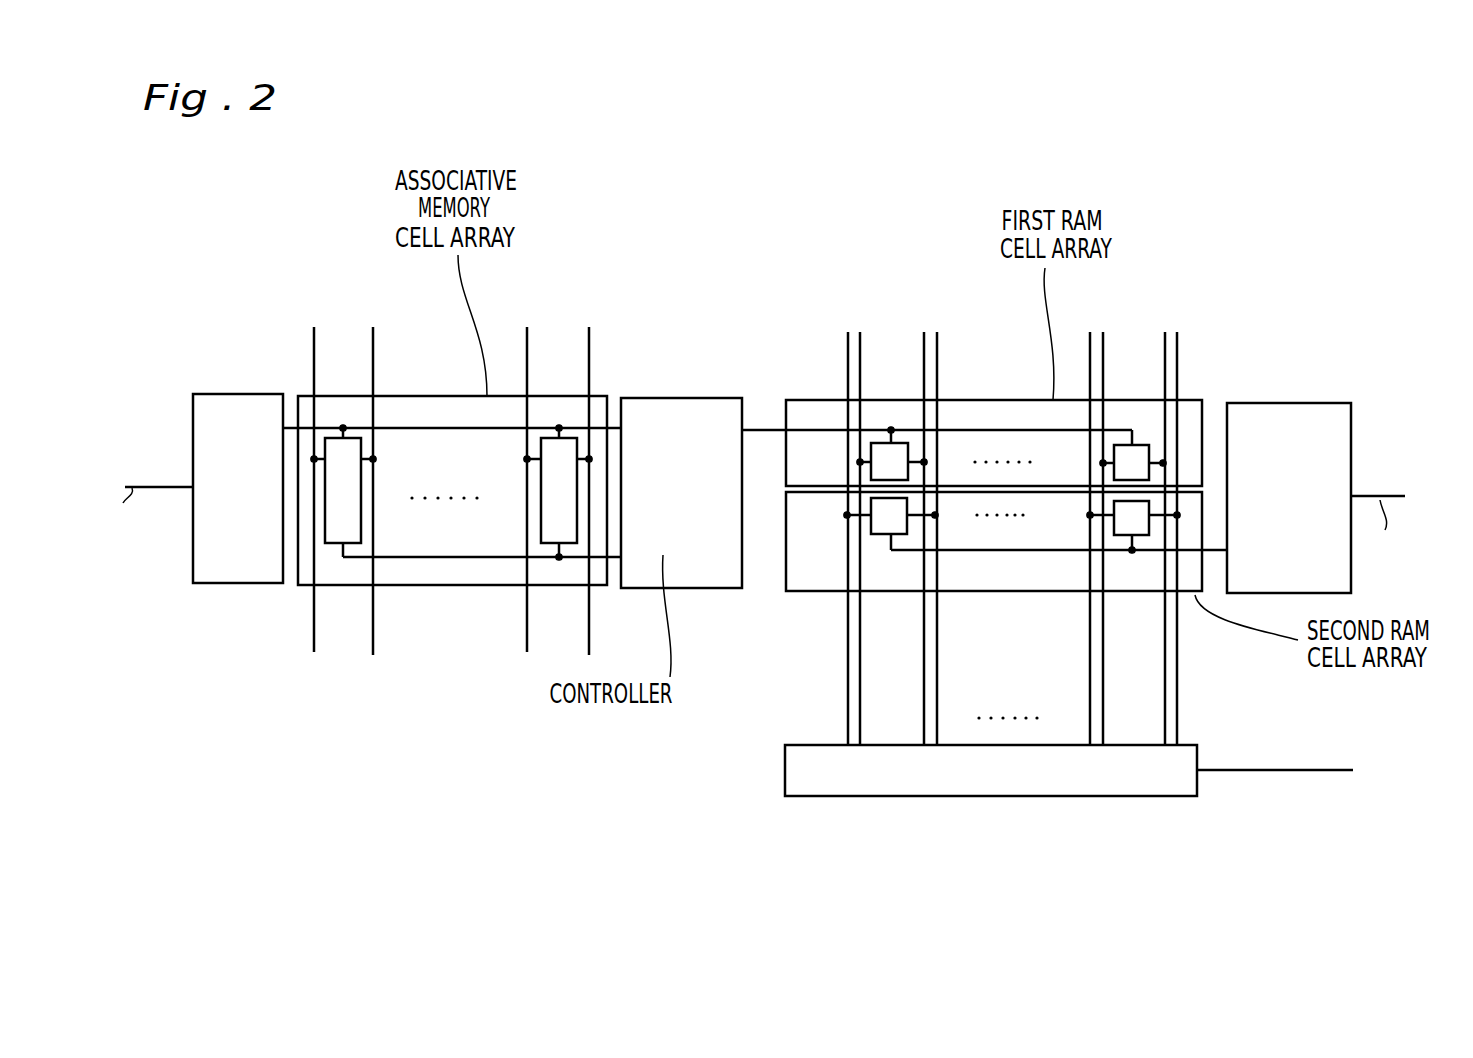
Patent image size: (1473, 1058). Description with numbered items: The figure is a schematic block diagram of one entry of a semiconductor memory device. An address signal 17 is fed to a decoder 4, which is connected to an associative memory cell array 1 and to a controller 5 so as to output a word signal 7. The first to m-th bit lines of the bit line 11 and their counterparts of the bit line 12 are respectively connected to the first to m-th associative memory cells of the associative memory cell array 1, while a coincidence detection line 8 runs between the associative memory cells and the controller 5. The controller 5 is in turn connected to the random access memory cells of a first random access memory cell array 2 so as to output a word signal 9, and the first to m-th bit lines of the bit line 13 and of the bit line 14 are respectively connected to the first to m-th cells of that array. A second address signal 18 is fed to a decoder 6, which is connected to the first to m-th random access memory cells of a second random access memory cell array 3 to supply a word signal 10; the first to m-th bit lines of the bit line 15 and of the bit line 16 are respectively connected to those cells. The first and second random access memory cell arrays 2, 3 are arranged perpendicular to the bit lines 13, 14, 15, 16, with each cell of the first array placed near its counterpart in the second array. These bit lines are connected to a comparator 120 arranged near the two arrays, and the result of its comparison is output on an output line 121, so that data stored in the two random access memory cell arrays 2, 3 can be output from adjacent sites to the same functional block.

The associative memory cell array 1 is at (435, 396).
The first random access memory cell array 2 is at (1002, 400).
The second random access memory cell array 3 is at (1022, 592).
The decoder 4 is at (228, 394).
The controller 5 is at (663, 398).
The decoder 6 is at (1280, 403).
The word signal 7 is at (433, 428).
The coincidence detection line 8 is at (427, 560).
The word signal 9 is at (1030, 433).
The word signal 10 is at (973, 550).
The bit line 11 is at (540, 315).
The bit line 12 is at (618, 315).
The bit line 13 is at (1108, 318).
The bit line 14 is at (924, 350).
The bit line 15 is at (1087, 647).
The bit line 16 is at (933, 637).
The address signal 17 is at (160, 486).
The address signal 18 is at (1363, 496).
The comparator 120 is at (785, 773).
The output line 121 is at (1287, 772).